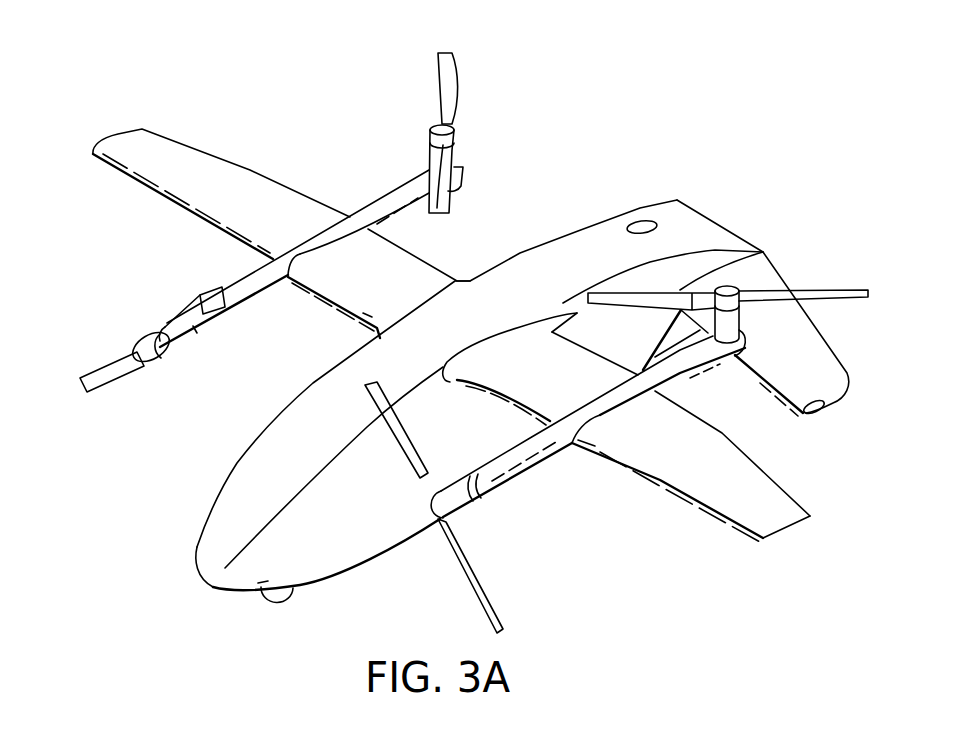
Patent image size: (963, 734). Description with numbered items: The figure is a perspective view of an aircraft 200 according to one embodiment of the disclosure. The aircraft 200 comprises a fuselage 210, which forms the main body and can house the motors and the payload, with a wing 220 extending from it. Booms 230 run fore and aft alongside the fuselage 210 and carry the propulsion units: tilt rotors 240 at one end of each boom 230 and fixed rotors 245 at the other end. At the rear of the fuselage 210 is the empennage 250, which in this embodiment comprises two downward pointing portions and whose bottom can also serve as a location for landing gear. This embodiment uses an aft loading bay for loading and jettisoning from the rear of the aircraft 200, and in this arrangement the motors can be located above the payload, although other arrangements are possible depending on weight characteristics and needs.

The aircraft 200 is at (177, 71).
The fuselage 210 is at (238, 463).
The wing 220 is at (690, 495).
The booms 230 is at (387, 193).
The tilt rotors 240 is at (113, 360).
The fixed rotors 245 is at (458, 92).
The empennage 250 is at (709, 193).